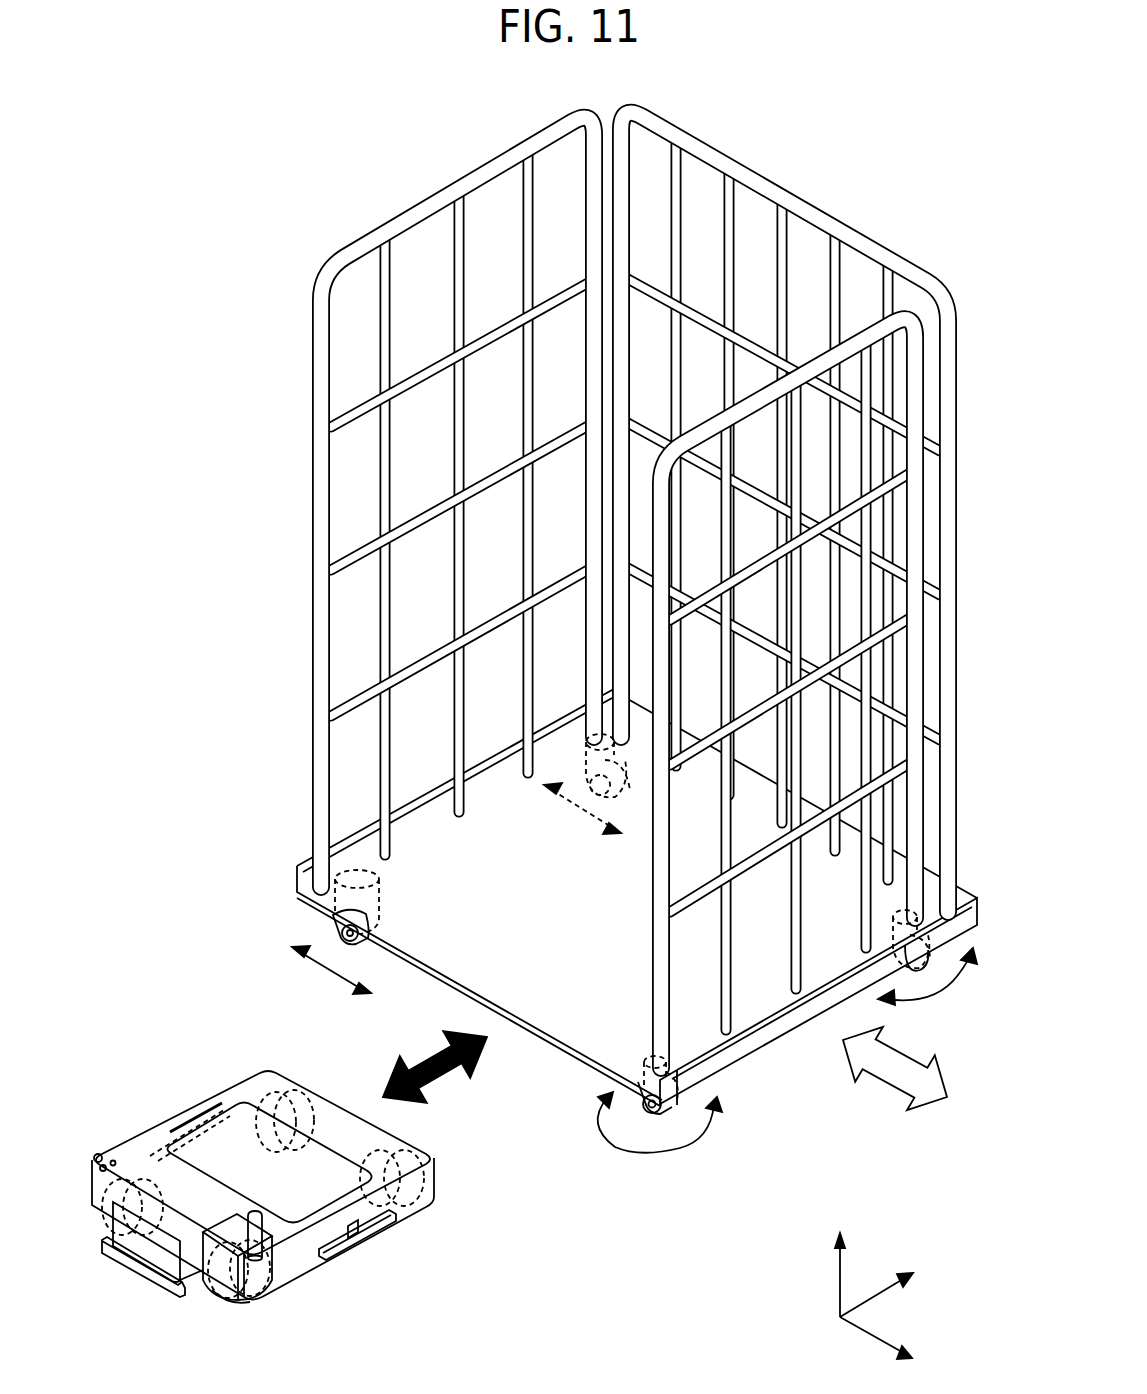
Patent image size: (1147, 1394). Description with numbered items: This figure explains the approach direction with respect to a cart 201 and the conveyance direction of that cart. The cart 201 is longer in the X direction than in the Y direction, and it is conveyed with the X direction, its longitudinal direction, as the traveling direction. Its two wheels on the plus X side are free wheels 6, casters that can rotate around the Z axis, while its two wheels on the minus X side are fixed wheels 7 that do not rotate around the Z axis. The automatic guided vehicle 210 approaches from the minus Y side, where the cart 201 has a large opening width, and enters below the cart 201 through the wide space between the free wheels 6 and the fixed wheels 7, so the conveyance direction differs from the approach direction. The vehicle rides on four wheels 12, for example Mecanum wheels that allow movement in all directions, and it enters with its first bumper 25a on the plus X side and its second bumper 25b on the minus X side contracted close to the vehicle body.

The cart 201 is at (312, 543).
The automatic guided vehicle 210 is at (228, 1078).
The fixed wheels 7 is at (330, 946).
The free wheels 6 is at (657, 1115).
The wheels 12 is at (230, 1300).
The first bumper 25a is at (358, 1232).
The second bumper 25b is at (152, 1152).